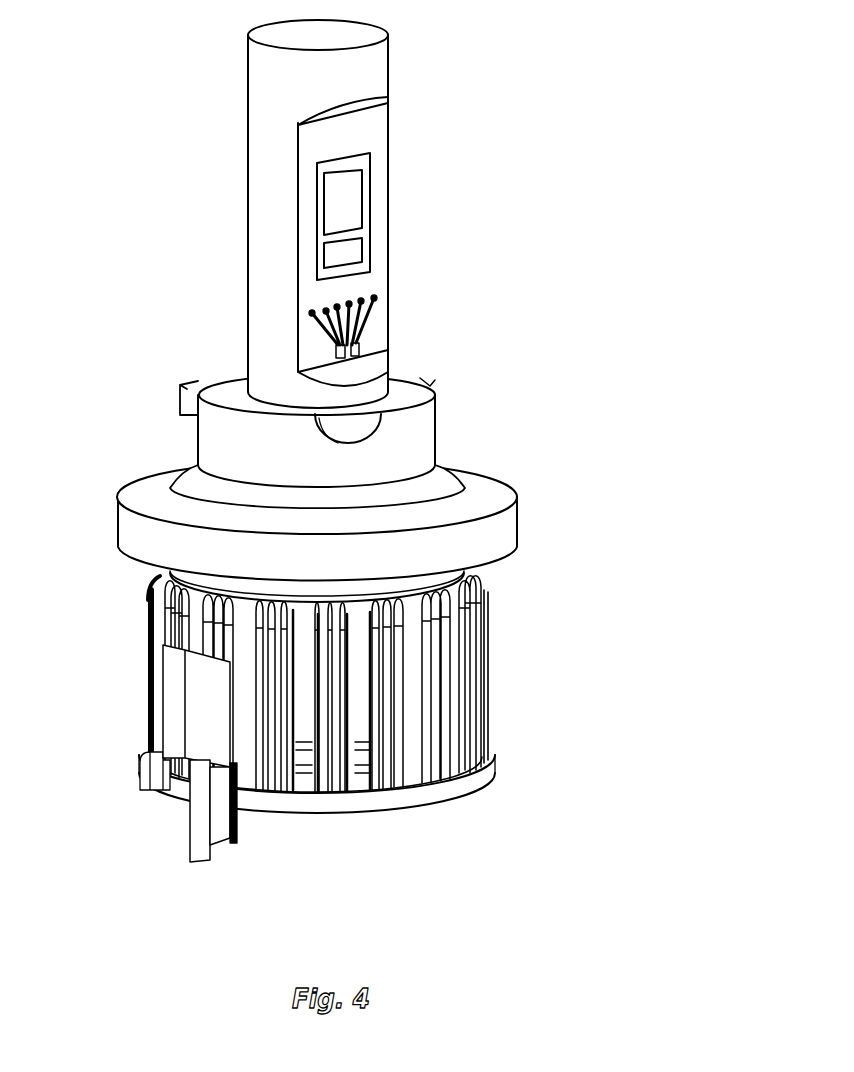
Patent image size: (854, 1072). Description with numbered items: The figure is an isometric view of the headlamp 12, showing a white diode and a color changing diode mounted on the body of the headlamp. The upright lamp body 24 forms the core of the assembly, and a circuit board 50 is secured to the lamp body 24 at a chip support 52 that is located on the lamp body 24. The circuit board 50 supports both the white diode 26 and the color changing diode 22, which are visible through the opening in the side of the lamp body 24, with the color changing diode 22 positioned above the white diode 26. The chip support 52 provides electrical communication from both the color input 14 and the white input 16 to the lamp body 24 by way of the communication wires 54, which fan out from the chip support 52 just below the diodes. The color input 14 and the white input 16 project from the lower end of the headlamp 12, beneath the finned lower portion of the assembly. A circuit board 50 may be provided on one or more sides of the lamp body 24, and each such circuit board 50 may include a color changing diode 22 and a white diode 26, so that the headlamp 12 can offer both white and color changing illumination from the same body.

The headlamp 12 is at (155, 266).
The color input 14 is at (233, 840).
The white input 16 is at (193, 848).
The color changing diode 22 is at (343, 193).
The lamp body 24 is at (358, 72).
The white diode 26 is at (343, 250).
The circuit board 50 is at (308, 148).
The chip support 52 is at (390, 353).
The communication wires 54 is at (378, 328).